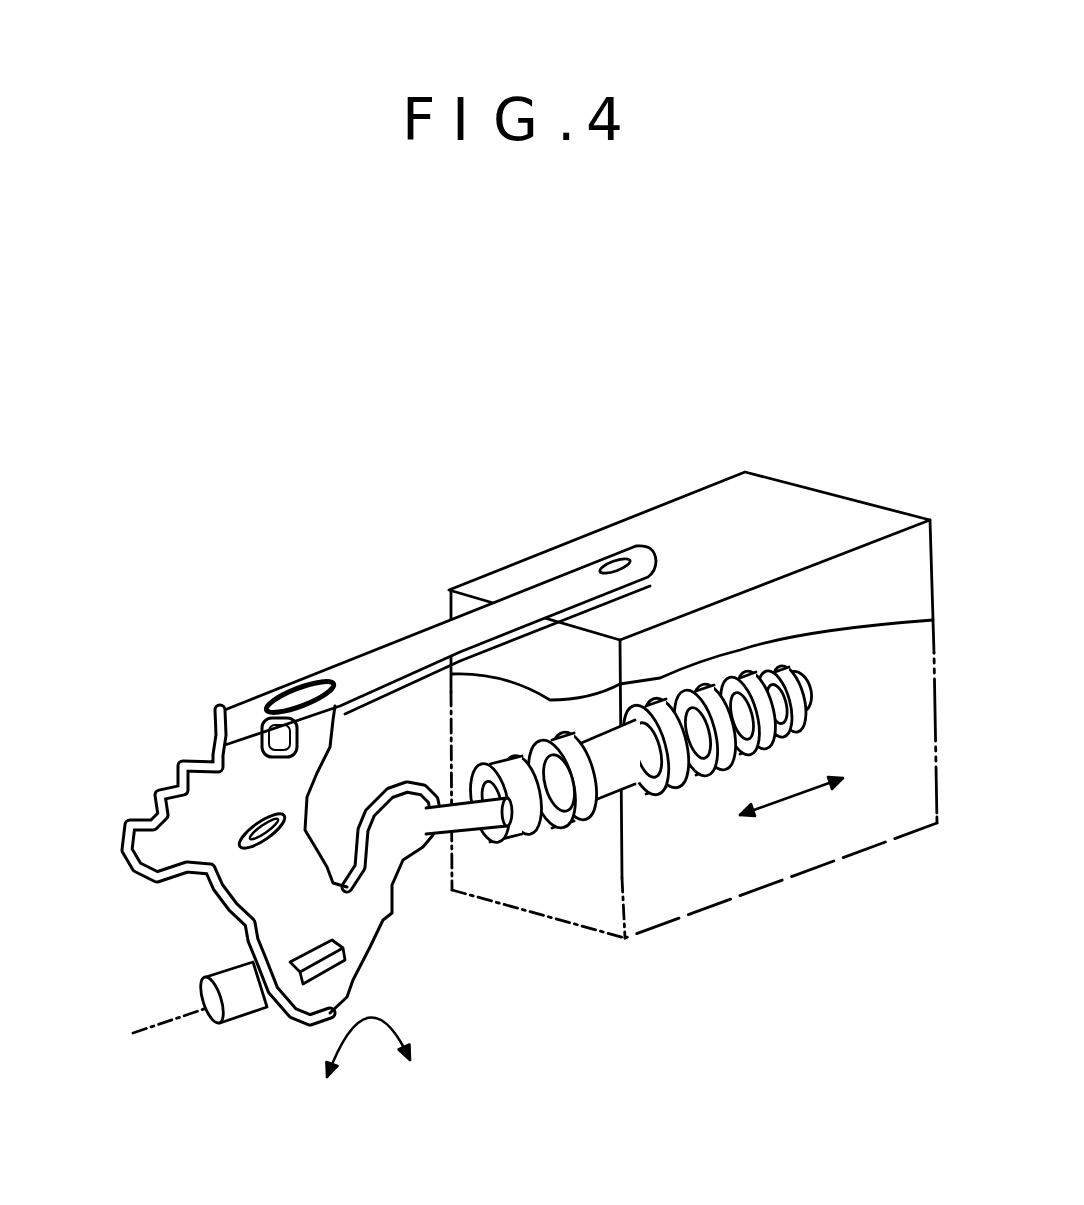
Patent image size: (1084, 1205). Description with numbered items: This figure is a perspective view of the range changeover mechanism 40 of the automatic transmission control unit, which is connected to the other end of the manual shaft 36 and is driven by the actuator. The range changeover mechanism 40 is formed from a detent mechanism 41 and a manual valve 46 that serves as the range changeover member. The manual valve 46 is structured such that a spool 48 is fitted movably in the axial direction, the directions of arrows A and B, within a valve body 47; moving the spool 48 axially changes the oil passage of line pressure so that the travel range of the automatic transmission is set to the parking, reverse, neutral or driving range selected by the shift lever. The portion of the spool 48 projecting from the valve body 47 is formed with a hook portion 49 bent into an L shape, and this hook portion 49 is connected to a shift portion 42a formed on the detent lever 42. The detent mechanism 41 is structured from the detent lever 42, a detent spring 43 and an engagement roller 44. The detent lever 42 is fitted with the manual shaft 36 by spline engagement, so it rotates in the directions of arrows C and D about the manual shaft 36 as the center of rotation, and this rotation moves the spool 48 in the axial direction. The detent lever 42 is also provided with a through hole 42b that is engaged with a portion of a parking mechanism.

The range changeover mechanism 40 is at (548, 388).
The detent mechanism 41 is at (370, 478).
The detent lever 42 is at (203, 810).
The shift portion 42a is at (400, 850).
The through hole 42b is at (240, 833).
The detent spring 43 is at (522, 600).
The engagement roller 44 is at (250, 717).
The manual valve 46 is at (603, 463).
The valve body 47 is at (813, 507).
The spool 48 is at (633, 805).
The hook portion 49 is at (470, 823).
The manual shaft 36 is at (277, 1013).